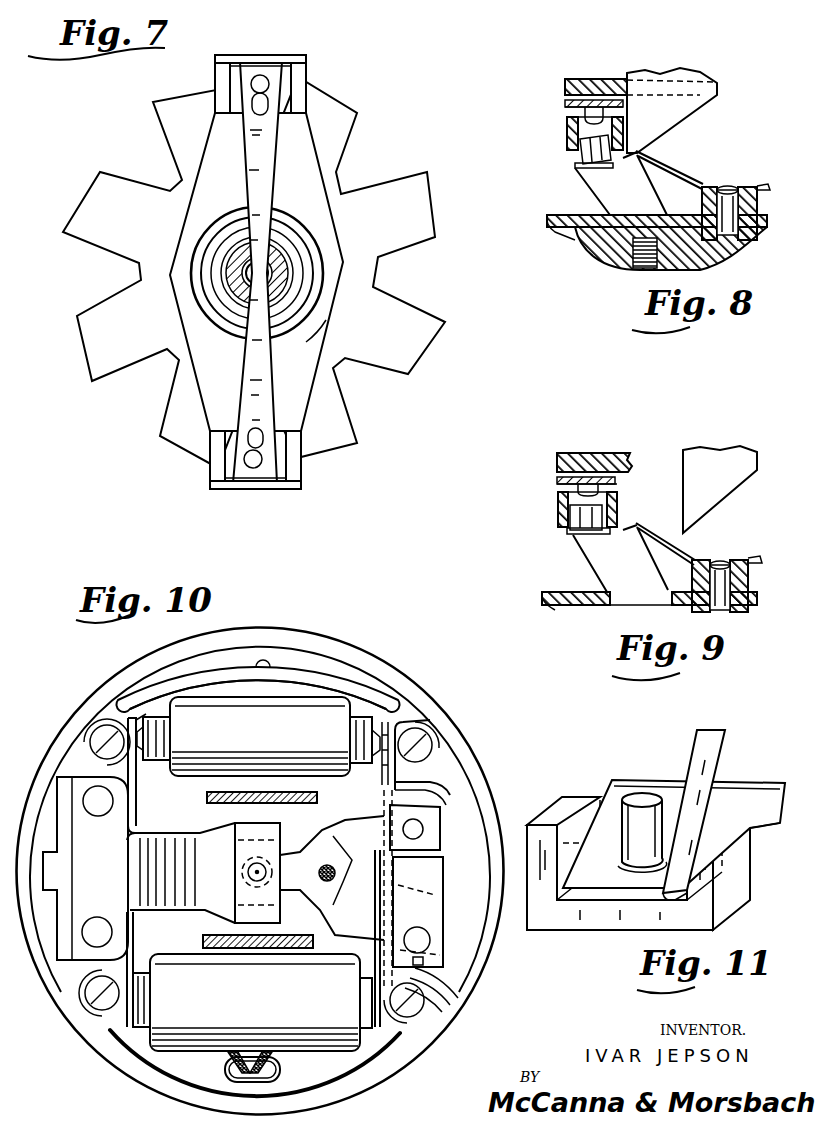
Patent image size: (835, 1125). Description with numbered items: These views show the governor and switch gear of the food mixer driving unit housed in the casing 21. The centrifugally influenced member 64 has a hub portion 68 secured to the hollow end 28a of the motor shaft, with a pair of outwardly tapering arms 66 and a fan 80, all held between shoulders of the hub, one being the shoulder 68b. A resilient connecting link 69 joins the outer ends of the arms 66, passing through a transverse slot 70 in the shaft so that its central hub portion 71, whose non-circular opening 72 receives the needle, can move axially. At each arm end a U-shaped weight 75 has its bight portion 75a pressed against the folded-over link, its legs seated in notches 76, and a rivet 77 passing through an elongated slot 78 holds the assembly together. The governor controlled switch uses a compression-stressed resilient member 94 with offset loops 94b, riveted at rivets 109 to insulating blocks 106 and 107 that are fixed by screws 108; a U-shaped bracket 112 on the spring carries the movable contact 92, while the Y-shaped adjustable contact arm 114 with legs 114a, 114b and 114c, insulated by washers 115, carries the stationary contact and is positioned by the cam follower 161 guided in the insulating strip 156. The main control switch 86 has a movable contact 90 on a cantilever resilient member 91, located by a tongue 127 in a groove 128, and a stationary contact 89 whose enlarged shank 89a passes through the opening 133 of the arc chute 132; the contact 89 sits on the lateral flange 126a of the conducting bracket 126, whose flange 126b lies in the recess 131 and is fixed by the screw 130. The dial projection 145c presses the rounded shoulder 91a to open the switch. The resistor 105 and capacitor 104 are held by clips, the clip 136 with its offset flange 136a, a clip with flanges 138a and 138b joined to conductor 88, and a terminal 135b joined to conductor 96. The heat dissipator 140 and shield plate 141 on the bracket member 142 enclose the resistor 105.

In FIG. 7, the centrifugally influenced member 64 is at (333, 113).
In FIG. 7, the fan 80 is at (449, 290).
In FIG. 7, the arms 66 is at (303, 174).
In FIG. 11, the arms 66 is at (762, 817).
In FIG. 7, the hub portion 68 is at (275, 236).
In FIG. 7, the shoulder 68b is at (308, 231).
In FIG. 7, the slot 70 is at (258, 243).
In FIG. 7, the hollow end of the shaft 28a is at (230, 275).
In FIG. 7, the non-circular opening 72 is at (259, 273).
In FIG. 7, the hub portion 71 is at (304, 337).
In FIG. 7, the resilient connecting link 69 is at (266, 162).
In FIG. 11, the resilient connecting link 69 is at (707, 748).
In FIG. 7, the elongated slot 78 is at (254, 110).
In FIG. 11, the elongated slot 78 is at (667, 822).
In FIG. 7, the rivet 77 is at (262, 76).
In FIG. 11, the rivet 77 is at (643, 798).
In FIG. 7, the weight 75 is at (308, 72).
In FIG. 11, the weight 75 is at (720, 915).
In FIG. 11, the bight portion 75a is at (618, 928).
In FIG. 11, the notches 76 is at (737, 887).
In FIG. 11, the shield plate 141 is at (730, 800).
In FIG. 8, the insulating strip 156 is at (592, 79).
In FIG. 9, the insulating strip 156 is at (571, 453).
In FIG. 8, the projection 145c is at (680, 122).
In FIG. 9, the projection 145c is at (720, 490).
In FIG. 8, the lateral flange 126a is at (567, 98).
In FIG. 9, the lateral flange 126a is at (567, 482).
In FIG. 10, the lateral flange 126a is at (430, 826).
In FIG. 8, the enlarged shank portion 89a is at (565, 104).
In FIG. 9, the enlarged shank portion 89a is at (558, 482).
In FIG. 8, the opening 133 is at (624, 108).
In FIG. 9, the opening 133 is at (617, 484).
In FIG. 10, the opening 133 is at (137, 782).
In FIG. 8, the stationary contact 89 is at (569, 128).
In FIG. 9, the stationary contact 89 is at (560, 507).
In FIG. 8, the arc chute 132 is at (580, 146).
In FIG. 9, the arc chute 132 is at (560, 517).
In FIG. 8, the main control switch 86 is at (546, 162).
In FIG. 9, the main control switch 86 is at (560, 543).
In FIG. 8, the movable contact 90 is at (577, 167).
In FIG. 9, the movable contact 90 is at (567, 532).
In FIG. 8, the conducting bracket 126 is at (605, 192).
In FIG. 9, the conducting bracket 126 is at (597, 567).
In FIG. 8, the recess 131 is at (665, 214).
In FIG. 8, the rounded shoulder 91a is at (653, 152).
In FIG. 9, the rounded shoulder 91a is at (637, 525).
In FIG. 8, the resilient member 91 is at (683, 172).
In FIG. 9, the resilient member 91 is at (680, 548).
In FIG. 10, the resilient member 91 is at (412, 906).
In FIG. 8, the flange 126b is at (607, 247).
In FIG. 8, the screw 130 is at (643, 267).
In FIG. 8, the insulating block 107 is at (712, 245).
In FIG. 9, the insulating block 107 is at (743, 610).
In FIG. 10, the insulating block 107 is at (403, 787).
In FIG. 8, the insulated washers 115 is at (757, 205).
In FIG. 9, the insulated washers 115 is at (748, 580).
In FIG. 8, the leg 114c is at (757, 188).
In FIG. 9, the leg 114c is at (750, 562).
In FIG. 10, the leg 114c is at (340, 958).
In FIG. 10, the casing 21 is at (353, 645).
In FIG. 10, the heat dissipator 140 is at (290, 675).
In FIG. 10, the conductor 96 is at (227, 1060).
In FIG. 10, the conductor 88 is at (283, 1063).
In FIG. 10, the insulating block 106 is at (82, 755).
In FIG. 10, the rivets 109 is at (98, 816).
In FIG. 10, the screws 108 is at (100, 735).
In FIG. 10, the clip 136 is at (400, 722).
In FIG. 10, the offset flange 136a is at (400, 792).
In FIG. 10, the offset flange 138a is at (453, 912).
In FIG. 10, the groove 128 is at (432, 970).
In FIG. 10, the tongue 127 is at (440, 985).
In FIG. 10, the offset terminal flange 138b is at (413, 1010).
In FIG. 10, the resistor 105 is at (260, 736).
In FIG. 10, the bracket member 142 is at (223, 793).
In FIG. 10, the leg 114b is at (352, 802).
In FIG. 10, the capacitor 104 is at (255, 1002).
In FIG. 10, the terminal 135b is at (148, 975).
In FIG. 10, the leg 114a is at (293, 950).
In FIG. 10, the adjustable contact arm 114 is at (332, 950).
In FIG. 10, the resilient member 94 is at (218, 825).
In FIG. 10, the loops or folds 94b is at (163, 870).
In FIG. 10, the U-shaped bracket 112 is at (267, 847).
In FIG. 10, the movable contact 92 is at (248, 872).
In FIG. 10, the cam follower 161 is at (317, 833).